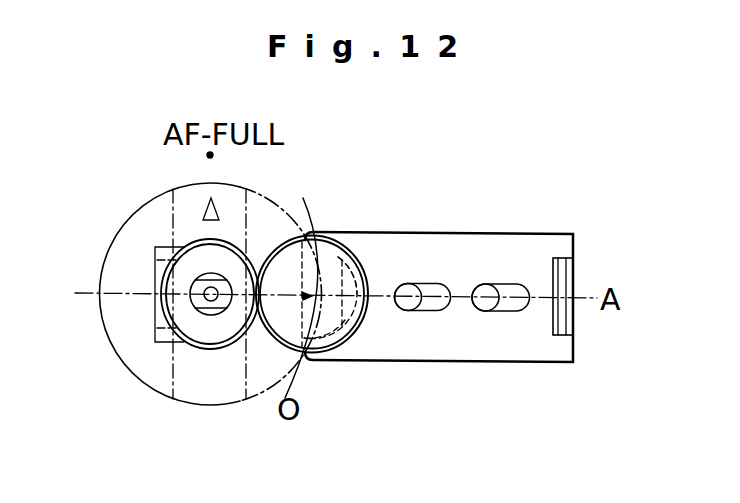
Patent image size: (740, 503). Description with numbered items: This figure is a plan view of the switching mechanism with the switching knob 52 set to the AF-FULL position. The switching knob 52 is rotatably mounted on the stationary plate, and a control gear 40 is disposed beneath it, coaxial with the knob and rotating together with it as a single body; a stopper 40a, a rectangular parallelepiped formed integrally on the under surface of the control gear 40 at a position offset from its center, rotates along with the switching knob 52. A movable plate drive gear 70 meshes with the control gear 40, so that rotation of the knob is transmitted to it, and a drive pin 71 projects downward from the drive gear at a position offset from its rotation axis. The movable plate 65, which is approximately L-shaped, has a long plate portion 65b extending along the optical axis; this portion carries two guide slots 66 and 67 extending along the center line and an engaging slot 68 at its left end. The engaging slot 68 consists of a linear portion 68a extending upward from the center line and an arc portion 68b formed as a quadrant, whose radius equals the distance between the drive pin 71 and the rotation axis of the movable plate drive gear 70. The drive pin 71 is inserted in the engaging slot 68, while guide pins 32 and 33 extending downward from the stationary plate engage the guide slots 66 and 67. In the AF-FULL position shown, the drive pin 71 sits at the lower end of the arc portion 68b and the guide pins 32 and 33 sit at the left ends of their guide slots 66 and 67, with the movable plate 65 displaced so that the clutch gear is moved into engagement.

The switching knob 52 is at (123, 262).
The control gear 40 is at (227, 348).
The stopper 40a is at (162, 318).
The movable plate drive gear 70 is at (286, 253).
The drive pin 71 is at (315, 330).
The engaging slot 68 is at (350, 312).
The linear portion 68a is at (350, 260).
The arc portion 68b is at (338, 336).
The movable plate 65 is at (574, 244).
The long plate portion 65b is at (493, 252).
The guide slot 66 is at (437, 292).
The guide slot 67 is at (515, 292).
The guide pin 32 is at (407, 304).
The guide pin 33 is at (487, 304).